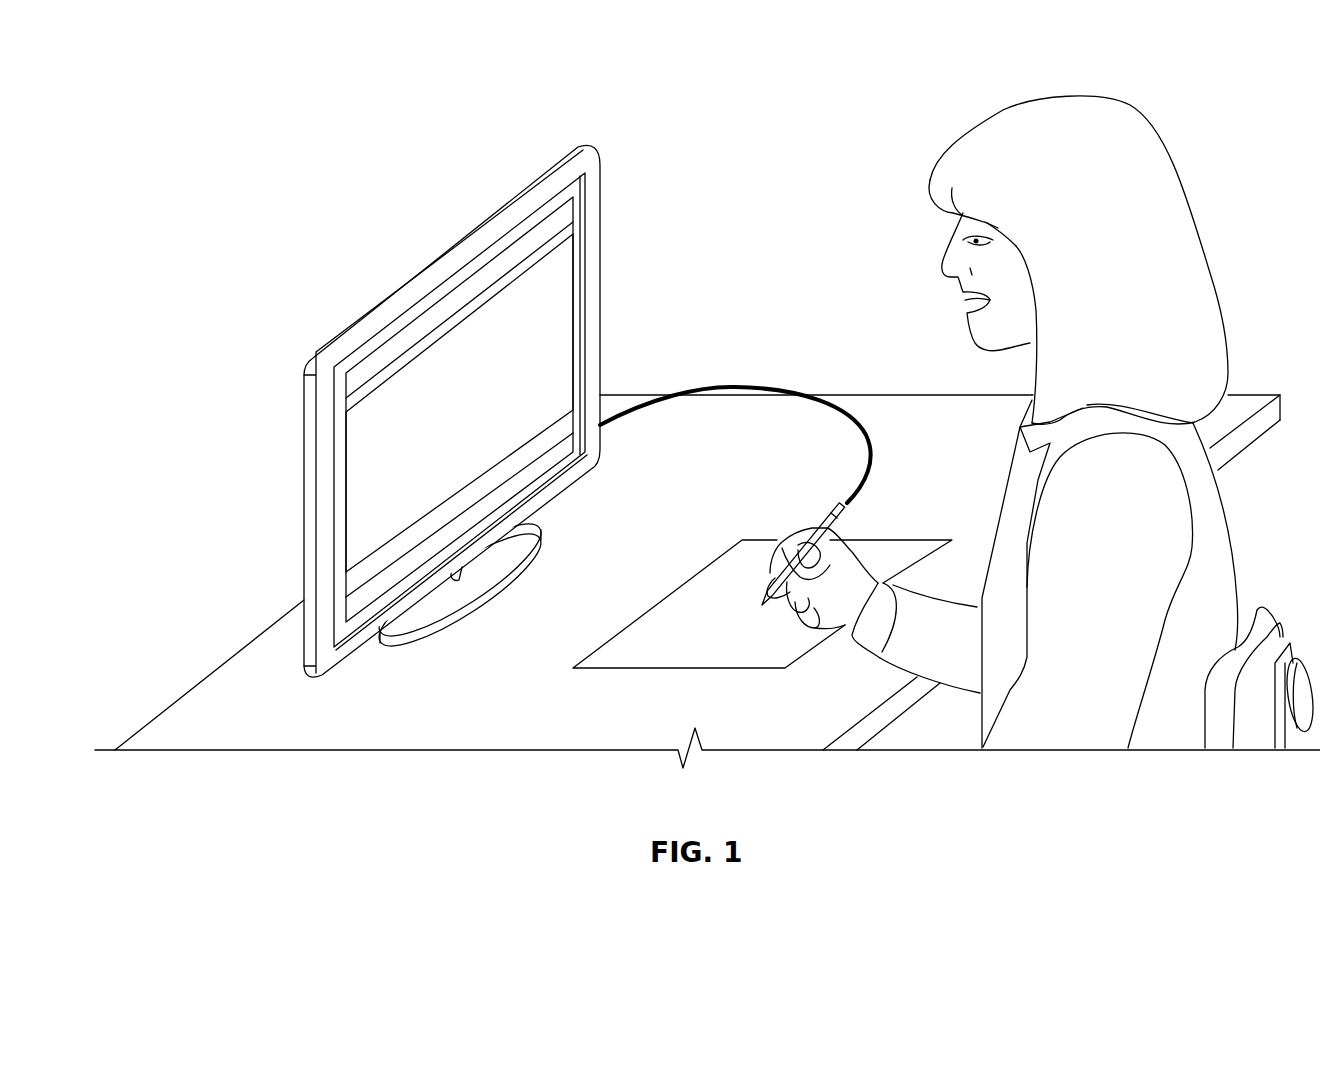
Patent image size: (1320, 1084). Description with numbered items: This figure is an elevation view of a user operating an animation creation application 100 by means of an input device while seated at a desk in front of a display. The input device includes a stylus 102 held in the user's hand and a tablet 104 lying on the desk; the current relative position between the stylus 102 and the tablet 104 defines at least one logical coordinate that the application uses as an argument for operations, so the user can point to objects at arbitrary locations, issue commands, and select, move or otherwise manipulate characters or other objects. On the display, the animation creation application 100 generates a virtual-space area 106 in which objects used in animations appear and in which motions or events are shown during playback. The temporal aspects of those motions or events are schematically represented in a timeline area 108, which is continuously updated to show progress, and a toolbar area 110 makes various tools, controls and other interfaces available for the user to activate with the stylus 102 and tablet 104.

The animation creation application 100 is at (402, 84).
The stylus 102 is at (840, 503).
The tablet 104 is at (617, 647).
The virtual-space area 106 is at (558, 300).
The timeline area 108 is at (358, 602).
The toolbar area 110 is at (558, 225).